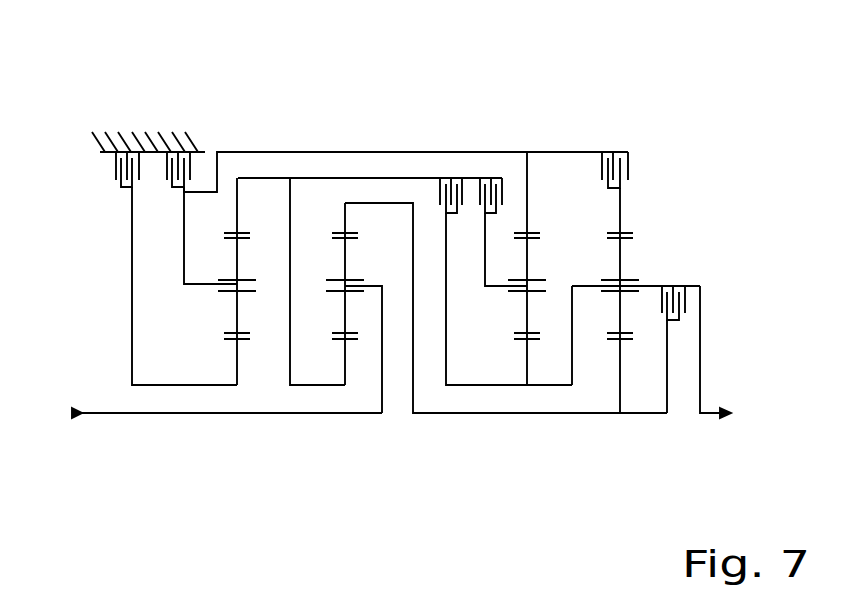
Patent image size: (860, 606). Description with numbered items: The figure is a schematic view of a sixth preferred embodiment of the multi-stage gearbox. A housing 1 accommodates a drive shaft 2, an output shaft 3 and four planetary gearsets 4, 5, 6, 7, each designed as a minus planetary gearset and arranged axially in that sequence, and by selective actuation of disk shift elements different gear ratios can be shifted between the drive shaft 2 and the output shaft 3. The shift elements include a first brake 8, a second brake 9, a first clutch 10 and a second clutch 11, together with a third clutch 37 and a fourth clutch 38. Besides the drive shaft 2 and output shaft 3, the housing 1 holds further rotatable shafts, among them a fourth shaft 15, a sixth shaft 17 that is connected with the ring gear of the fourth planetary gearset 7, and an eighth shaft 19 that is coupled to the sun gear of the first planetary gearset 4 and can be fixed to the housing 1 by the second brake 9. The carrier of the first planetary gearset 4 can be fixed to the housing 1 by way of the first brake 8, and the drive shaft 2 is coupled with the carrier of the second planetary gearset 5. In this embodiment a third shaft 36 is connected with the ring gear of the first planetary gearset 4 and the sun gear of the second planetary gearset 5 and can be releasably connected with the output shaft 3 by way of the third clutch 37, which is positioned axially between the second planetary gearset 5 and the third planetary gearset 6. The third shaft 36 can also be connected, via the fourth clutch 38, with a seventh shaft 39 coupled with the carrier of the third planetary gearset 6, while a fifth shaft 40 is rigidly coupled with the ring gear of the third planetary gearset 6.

The housing 1 is at (133, 143).
The drive shaft 2 is at (303, 413).
The output shaft 3 is at (698, 352).
The first planetary gearset 4 is at (238, 150).
The second planetary gearset 5 is at (347, 150).
The third planetary gearset 6 is at (528, 150).
The fourth planetary gearset 7 is at (620, 150).
The first brake 8 is at (180, 163).
The second brake 9 is at (118, 172).
The first clutch 10 is at (667, 312).
The second clutch 11 is at (632, 157).
The fourth shaft 15 is at (432, 413).
The sixth shaft 17 is at (622, 207).
The eighth shaft 19 is at (132, 322).
The third shaft 36 is at (267, 177).
The third clutch 37 is at (445, 190).
The fourth clutch 38 is at (490, 187).
The seventh shaft 39 is at (485, 242).
The fifth shaft 40 is at (315, 152).